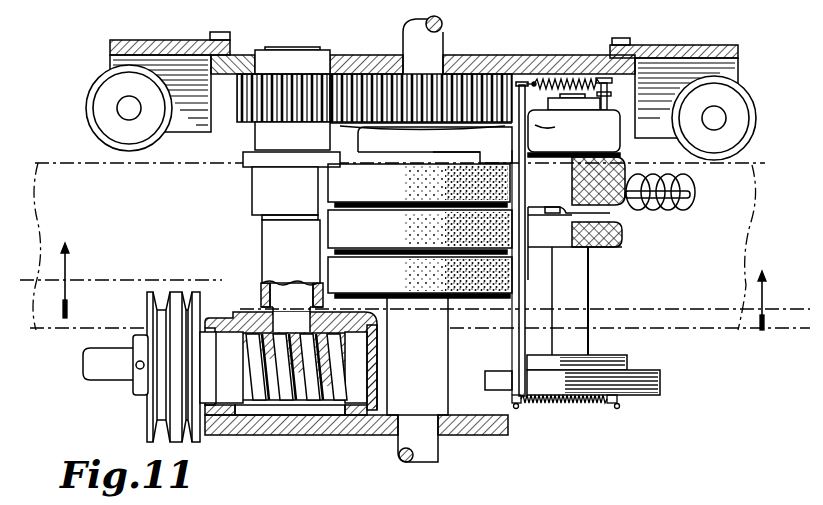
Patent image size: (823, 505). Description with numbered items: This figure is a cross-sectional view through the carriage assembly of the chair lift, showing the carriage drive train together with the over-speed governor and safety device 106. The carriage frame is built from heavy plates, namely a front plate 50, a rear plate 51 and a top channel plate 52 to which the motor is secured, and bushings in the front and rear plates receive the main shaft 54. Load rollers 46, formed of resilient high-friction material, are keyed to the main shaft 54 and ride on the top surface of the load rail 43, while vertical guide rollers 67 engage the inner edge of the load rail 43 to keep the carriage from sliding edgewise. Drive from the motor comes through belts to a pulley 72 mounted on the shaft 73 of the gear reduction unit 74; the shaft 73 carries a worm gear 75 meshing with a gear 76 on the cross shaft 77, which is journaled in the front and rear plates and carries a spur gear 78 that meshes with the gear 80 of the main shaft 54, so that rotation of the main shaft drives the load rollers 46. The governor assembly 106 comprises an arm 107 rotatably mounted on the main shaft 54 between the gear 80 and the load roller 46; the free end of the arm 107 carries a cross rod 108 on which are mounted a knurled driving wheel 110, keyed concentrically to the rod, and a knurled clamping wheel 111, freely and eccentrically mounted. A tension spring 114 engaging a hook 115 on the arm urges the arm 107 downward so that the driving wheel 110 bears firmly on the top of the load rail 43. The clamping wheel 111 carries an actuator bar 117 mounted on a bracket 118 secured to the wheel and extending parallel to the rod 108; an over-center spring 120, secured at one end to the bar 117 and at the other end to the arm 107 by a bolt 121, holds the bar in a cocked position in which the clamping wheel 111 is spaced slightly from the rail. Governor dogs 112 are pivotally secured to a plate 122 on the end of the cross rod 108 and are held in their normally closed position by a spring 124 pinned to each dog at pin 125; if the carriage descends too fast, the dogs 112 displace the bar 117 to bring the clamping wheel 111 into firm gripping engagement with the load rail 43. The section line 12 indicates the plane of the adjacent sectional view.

The section line 12- 12 is at (415, 246).
The load rail 43 is at (50, 161).
The load rollers 46 is at (350, 227).
The front plate 50 is at (508, 430).
The rear plate 51 is at (573, 62).
The top channel plate 52 is at (371, 503).
The main shaft 54 is at (432, 40).
The vertical guide rollers 67 is at (95, 95).
The pulley 72 is at (165, 408).
The shaft 73 is at (96, 370).
The gear reduction unit 74 is at (229, 305).
The worm gear 75 is at (302, 408).
The gear 76 is at (281, 406).
The cross shaft 77 is at (301, 51).
The spur gear 78 is at (251, 105).
The gear 80 is at (495, 75).
The over-speed governor and safety device 106 is at (514, 346).
The arm 107 is at (415, 140).
The cross rod 108 is at (585, 283).
The knurled driving wheel 110 is at (622, 248).
The knurled clamping wheel 111 is at (625, 161).
The governor dogs 112 is at (639, 375).
The tension spring 114 is at (686, 202).
The hook 115 is at (694, 191).
The actuator bar 117 is at (519, 137).
The bracket 118 is at (530, 263).
The spring 120 is at (548, 78).
The bolt 121 is at (608, 96).
The plate 122 is at (606, 362).
The spring 124 is at (577, 403).
The pin 125 is at (620, 406).